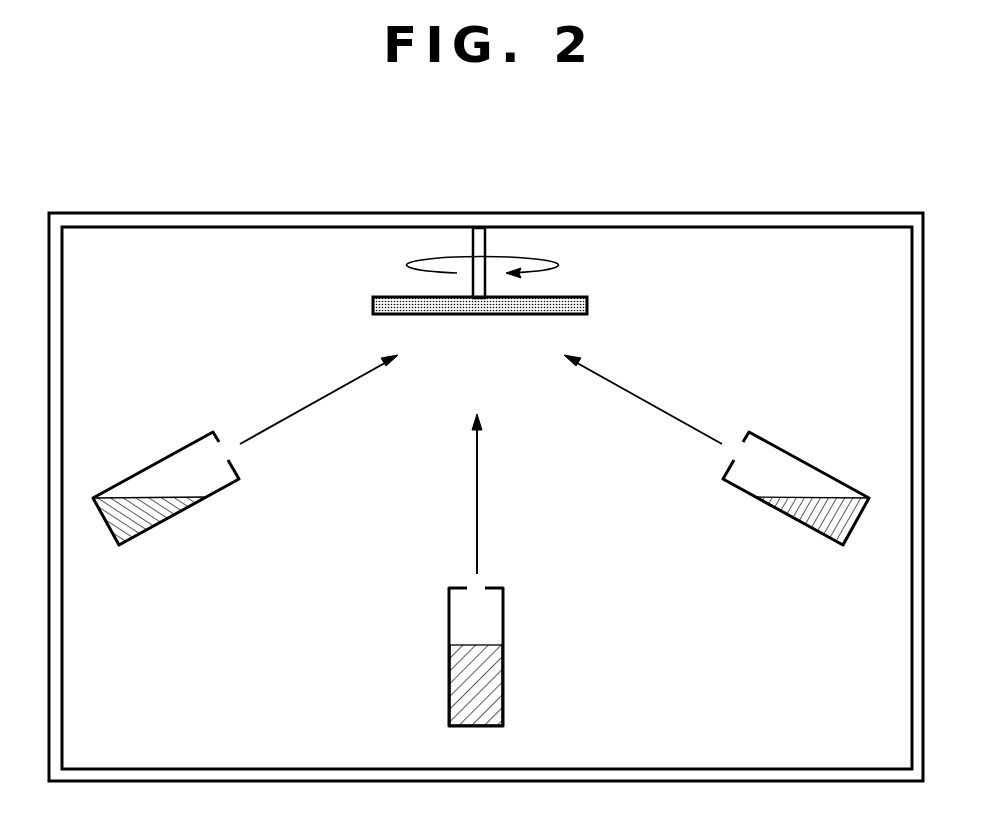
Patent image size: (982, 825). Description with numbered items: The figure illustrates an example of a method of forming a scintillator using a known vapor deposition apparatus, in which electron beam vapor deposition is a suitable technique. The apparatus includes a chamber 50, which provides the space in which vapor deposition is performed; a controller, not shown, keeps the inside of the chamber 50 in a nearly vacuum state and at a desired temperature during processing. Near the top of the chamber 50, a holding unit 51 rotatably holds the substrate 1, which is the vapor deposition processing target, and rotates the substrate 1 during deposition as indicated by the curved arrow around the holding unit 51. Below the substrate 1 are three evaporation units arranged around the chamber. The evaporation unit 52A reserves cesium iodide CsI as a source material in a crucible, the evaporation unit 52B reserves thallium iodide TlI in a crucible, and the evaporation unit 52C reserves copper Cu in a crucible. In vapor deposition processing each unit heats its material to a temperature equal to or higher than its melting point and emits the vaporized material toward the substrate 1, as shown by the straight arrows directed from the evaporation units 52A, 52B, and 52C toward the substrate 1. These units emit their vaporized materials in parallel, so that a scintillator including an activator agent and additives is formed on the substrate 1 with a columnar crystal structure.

The chamber 50 is at (241, 213).
The holding unit 51 is at (485, 240).
The substrate 1 is at (588, 305).
The evaporation unit 52A is at (170, 481).
The evaporation unit 52B is at (796, 481).
The evaporation unit 52C is at (501, 659).
The cesium iodide CsI is at (153, 520).
The thallium iodide TlI is at (818, 518).
The copper Cu is at (455, 697).